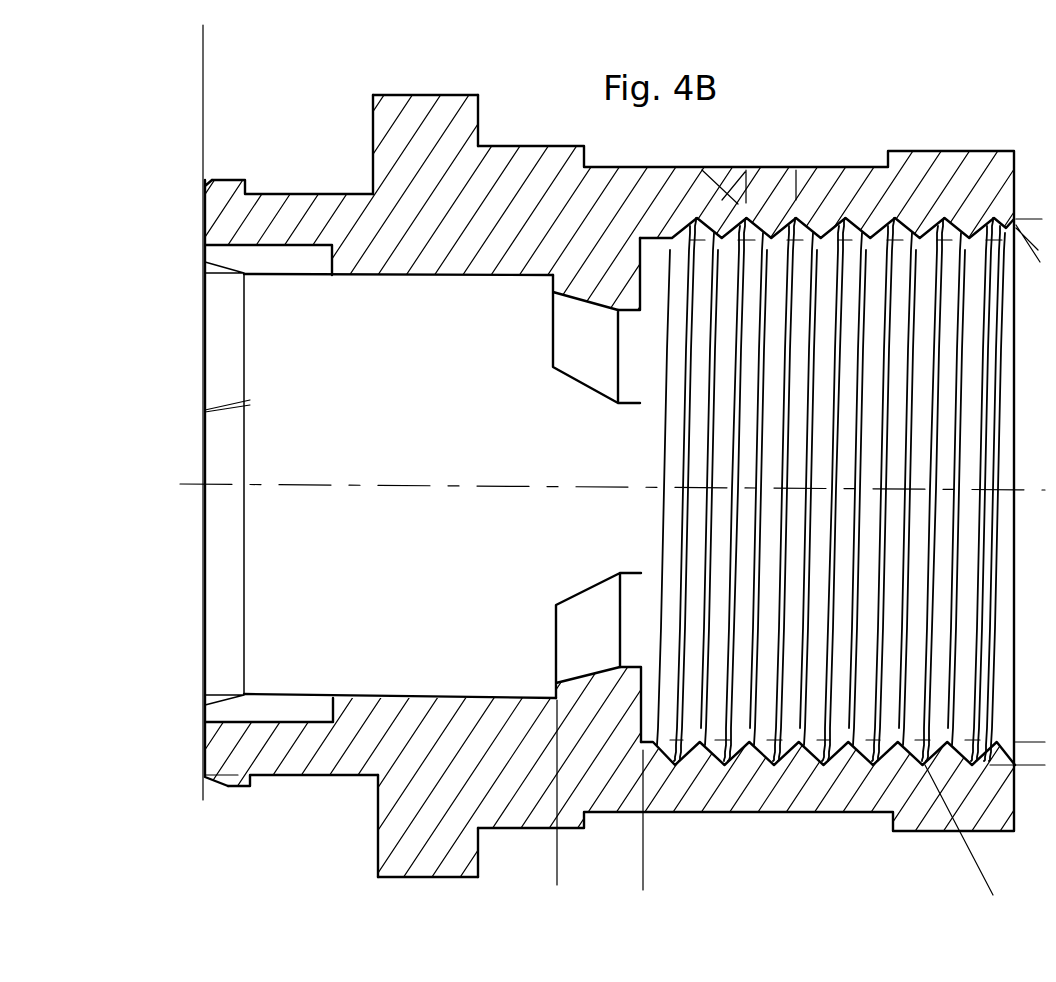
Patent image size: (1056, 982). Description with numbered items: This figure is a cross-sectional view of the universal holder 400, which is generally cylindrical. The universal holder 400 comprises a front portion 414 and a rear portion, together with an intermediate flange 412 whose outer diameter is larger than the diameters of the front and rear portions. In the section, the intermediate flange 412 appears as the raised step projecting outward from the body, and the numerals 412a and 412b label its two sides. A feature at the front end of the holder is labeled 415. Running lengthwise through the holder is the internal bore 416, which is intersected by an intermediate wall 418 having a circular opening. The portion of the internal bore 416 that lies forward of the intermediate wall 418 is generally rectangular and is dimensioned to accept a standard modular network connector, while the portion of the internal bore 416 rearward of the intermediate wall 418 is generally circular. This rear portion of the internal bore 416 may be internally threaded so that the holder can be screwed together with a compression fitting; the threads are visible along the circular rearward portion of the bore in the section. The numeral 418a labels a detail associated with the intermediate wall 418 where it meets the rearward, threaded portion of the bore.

The universal holder 400 is at (305, 80).
The intermediate flange 412 is at (430, 95).
The first side face of ring 412a is at (373, 143).
The second side face of ring 412b is at (480, 122).
The front portion 414 is at (300, 195).
The end flange 415 is at (215, 750).
The internal bore 416 is at (270, 464).
The intermediate wall 418 is at (575, 330).
The shoulder edge 418a is at (643, 390).